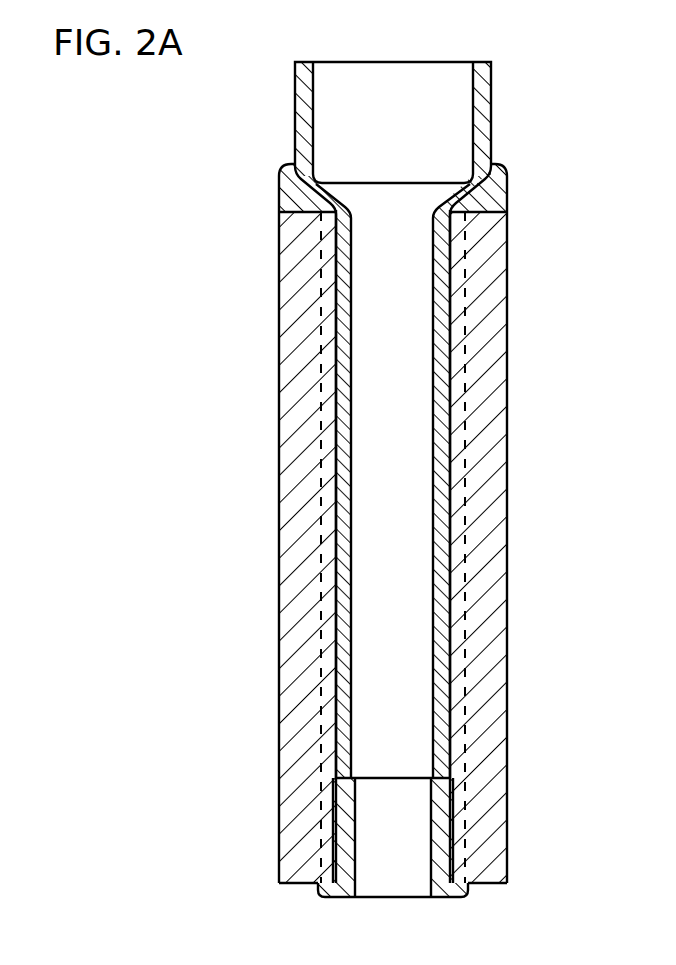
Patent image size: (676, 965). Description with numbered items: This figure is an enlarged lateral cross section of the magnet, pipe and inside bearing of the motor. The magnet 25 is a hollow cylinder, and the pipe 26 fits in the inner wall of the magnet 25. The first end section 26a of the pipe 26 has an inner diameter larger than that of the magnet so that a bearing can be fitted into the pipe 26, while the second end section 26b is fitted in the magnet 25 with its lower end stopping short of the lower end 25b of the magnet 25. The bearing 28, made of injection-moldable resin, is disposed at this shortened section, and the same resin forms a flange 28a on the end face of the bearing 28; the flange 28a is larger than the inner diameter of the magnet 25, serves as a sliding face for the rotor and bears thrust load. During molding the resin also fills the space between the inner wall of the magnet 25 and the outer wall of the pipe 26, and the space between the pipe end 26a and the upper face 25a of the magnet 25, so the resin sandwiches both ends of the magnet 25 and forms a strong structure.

The magnet 25 is at (449, 548).
The upper face of magnet 25a is at (505, 202).
The lower end of magnet 25b is at (488, 888).
The pipe 26 is at (445, 419).
The first end section of pipe 26a is at (482, 95).
The second end section of pipe 26b is at (433, 740).
The bearing 28 is at (411, 862).
The flange 28a is at (322, 892).